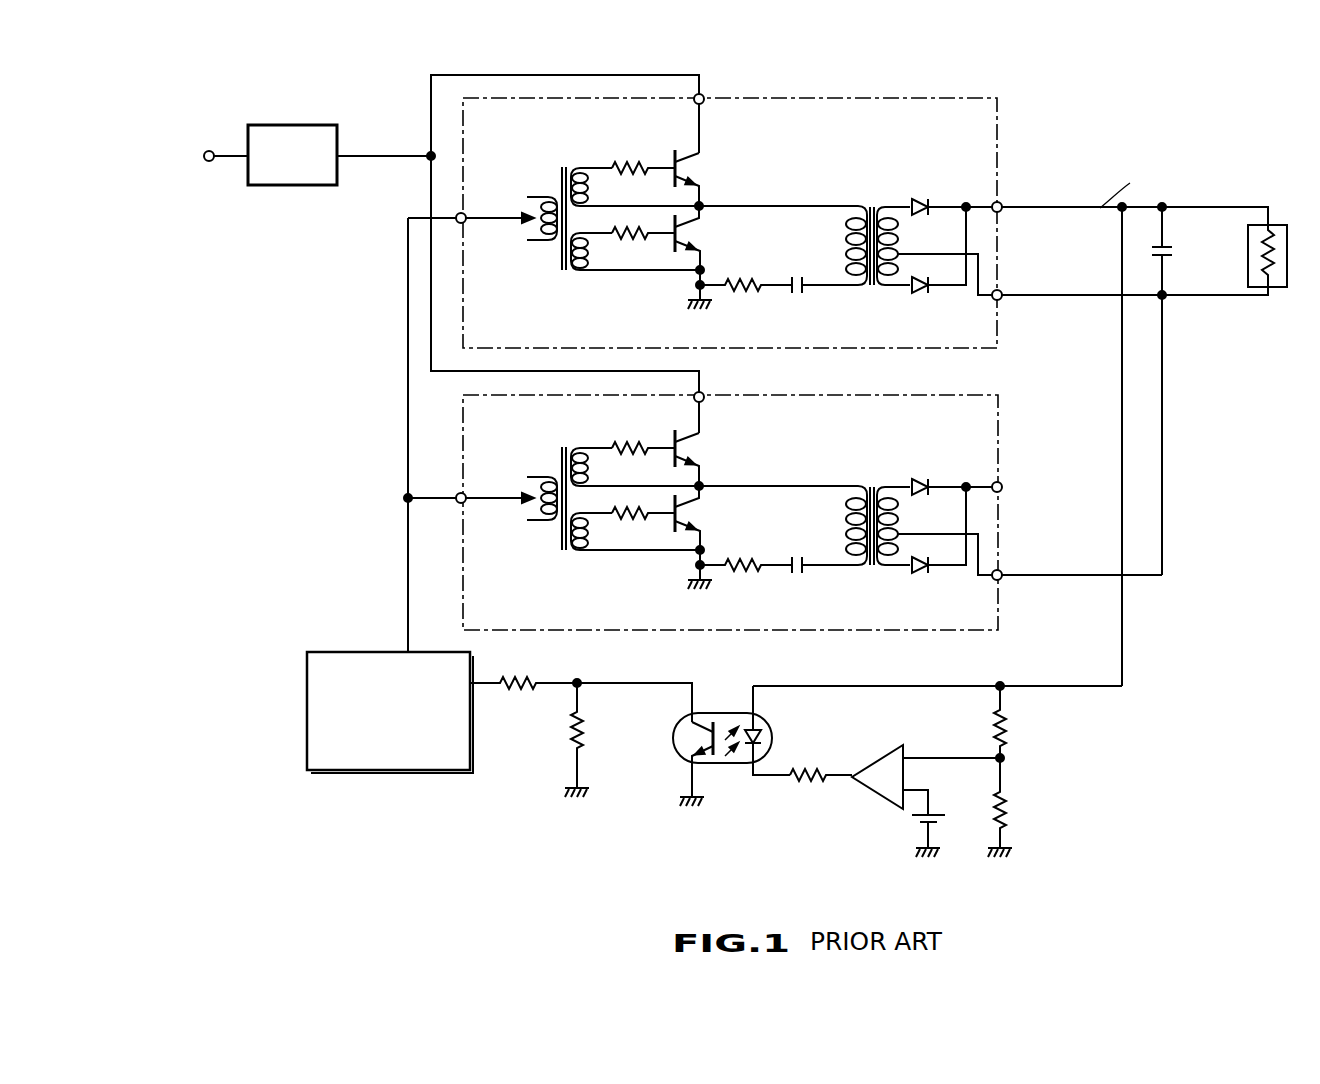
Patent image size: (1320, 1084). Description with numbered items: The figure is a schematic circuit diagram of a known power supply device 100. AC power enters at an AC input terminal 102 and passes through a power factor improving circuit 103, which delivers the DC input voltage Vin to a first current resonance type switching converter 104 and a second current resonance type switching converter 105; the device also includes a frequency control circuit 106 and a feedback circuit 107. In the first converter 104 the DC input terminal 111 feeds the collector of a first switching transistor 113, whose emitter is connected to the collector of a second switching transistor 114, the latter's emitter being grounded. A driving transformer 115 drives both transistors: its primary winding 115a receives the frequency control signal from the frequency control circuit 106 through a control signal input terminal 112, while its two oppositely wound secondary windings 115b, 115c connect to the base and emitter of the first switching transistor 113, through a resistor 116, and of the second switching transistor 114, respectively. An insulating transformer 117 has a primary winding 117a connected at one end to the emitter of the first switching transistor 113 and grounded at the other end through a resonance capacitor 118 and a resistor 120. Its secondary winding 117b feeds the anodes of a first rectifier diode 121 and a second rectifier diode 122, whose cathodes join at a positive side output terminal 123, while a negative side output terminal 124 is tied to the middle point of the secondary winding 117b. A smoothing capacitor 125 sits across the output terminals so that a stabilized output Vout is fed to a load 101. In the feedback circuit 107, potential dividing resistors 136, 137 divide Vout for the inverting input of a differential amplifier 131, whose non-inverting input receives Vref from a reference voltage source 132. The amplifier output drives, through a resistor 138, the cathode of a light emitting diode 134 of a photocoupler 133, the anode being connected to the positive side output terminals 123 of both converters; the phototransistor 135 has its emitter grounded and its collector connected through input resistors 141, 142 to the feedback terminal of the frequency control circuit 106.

The power supply device 100 is at (314, 307).
The load 101 is at (1280, 288).
The AC input terminal 102 is at (208, 162).
The power factor improving circuit 103 is at (300, 186).
The first current resonance type switching converter 104 is at (997, 128).
The second current resonance type switching converter 105 is at (998, 428).
The frequency control circuit 106 is at (338, 650).
The feedback circuit 107 is at (934, 786).
The DC input terminal 111 is at (703, 96).
The control signal input terminal 112 is at (465, 214).
The first switching transistor 113 is at (697, 167).
The second switching transistor 114 is at (697, 233).
The driving transformer 115 is at (586, 364).
The primary winding 115a is at (527, 243).
The secondary winding 115b is at (577, 166).
The secondary winding 115c is at (571, 273).
The resistor 116 is at (637, 162).
The insulating transformer 117 is at (802, 354).
The primary winding 117a is at (860, 208).
The secondary winding 117b is at (883, 205).
The resonance capacitor 118 is at (804, 294).
The resistor 120 is at (740, 290).
The first rectifier diode 121 is at (927, 200).
The second rectifier diode 122 is at (917, 295).
The positive side output terminal 123 is at (1002, 204).
The negative side output terminal 124 is at (1002, 300).
The smoothing capacitor 125 is at (1178, 252).
The differential amplifier 131 is at (880, 770).
The reference voltage source 132 is at (917, 820).
The photocoupler 133 is at (717, 757).
The light emitting diode 134 is at (760, 728).
The phototransistor 135 is at (687, 738).
The potential dividing resistor 136 is at (1008, 733).
The potential dividing resistor 137 is at (1008, 817).
The resistor 138 is at (826, 750).
The input resistor 141 is at (520, 692).
The input resistor 142 is at (565, 738).